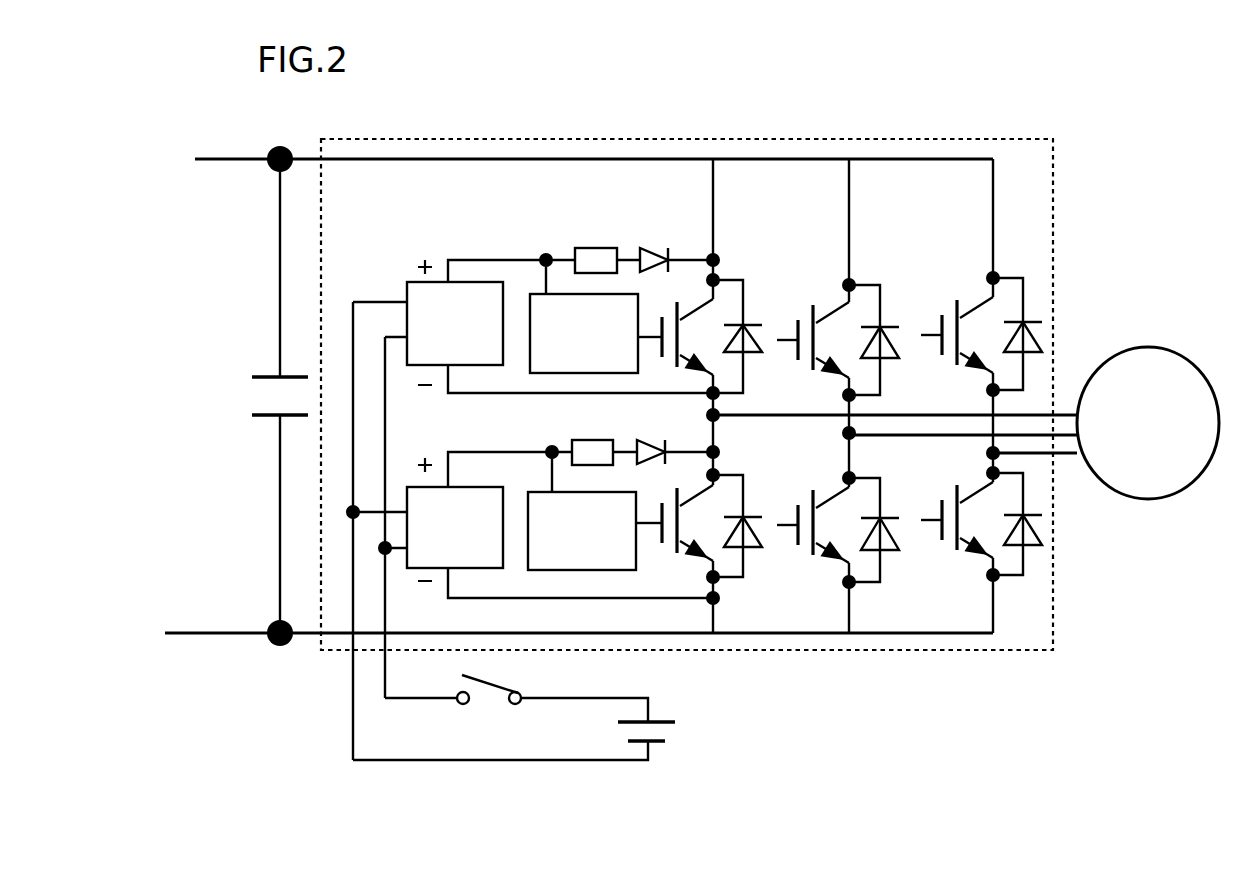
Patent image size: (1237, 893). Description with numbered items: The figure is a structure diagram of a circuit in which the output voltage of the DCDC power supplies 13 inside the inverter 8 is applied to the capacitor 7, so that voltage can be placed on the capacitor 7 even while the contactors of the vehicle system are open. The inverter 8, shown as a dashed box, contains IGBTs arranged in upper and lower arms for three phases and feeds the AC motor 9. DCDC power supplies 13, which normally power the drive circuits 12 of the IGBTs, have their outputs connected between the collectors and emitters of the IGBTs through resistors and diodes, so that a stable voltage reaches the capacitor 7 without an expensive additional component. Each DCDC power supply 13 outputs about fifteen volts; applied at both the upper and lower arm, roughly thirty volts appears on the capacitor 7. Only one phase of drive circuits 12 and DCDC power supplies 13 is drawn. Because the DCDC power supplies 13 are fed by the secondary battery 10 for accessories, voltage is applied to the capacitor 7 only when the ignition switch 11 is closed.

The capacitor 7 is at (268, 377).
The inverter 8 is at (1053, 171).
The AC motor 9 is at (1141, 347).
The secondary battery for accessories 10 is at (683, 732).
The ignition switch 11 is at (497, 678).
The drive circuits 12 is at (530, 318).
The DCDC power supplies 13 is at (407, 290).